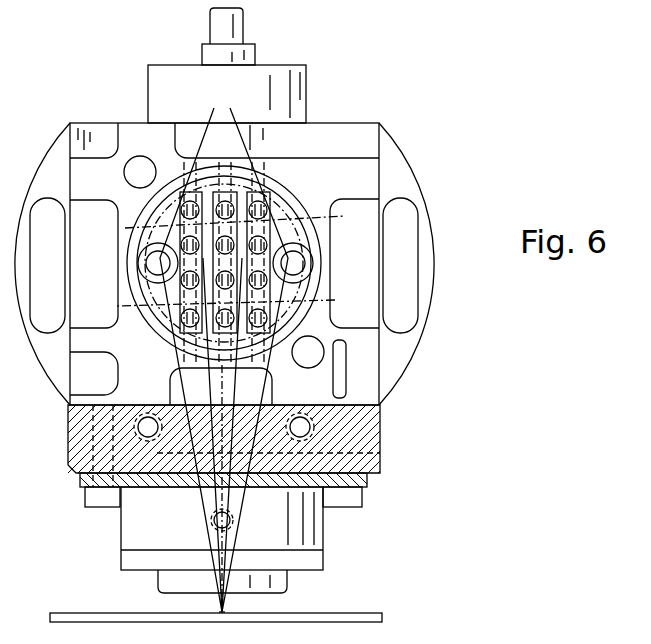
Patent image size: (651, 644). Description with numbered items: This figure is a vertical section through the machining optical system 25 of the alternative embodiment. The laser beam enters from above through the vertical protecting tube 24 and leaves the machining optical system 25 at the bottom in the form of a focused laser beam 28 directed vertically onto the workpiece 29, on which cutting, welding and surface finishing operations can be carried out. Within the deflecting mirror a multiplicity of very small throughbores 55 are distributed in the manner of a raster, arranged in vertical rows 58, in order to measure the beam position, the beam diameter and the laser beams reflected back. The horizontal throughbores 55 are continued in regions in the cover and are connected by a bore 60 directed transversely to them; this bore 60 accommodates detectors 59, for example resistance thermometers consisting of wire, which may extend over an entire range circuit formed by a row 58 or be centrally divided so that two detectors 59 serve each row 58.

The protecting tube 24 is at (212, 14).
The machining optical system 25 is at (405, 103).
The vertical rows 58 is at (256, 192).
The throughbores 55 is at (186, 284).
The detectors 59 is at (125, 228).
The bore 60 is at (335, 300).
The focused laser beam 28 is at (219, 605).
The workpiece 29 is at (305, 592).